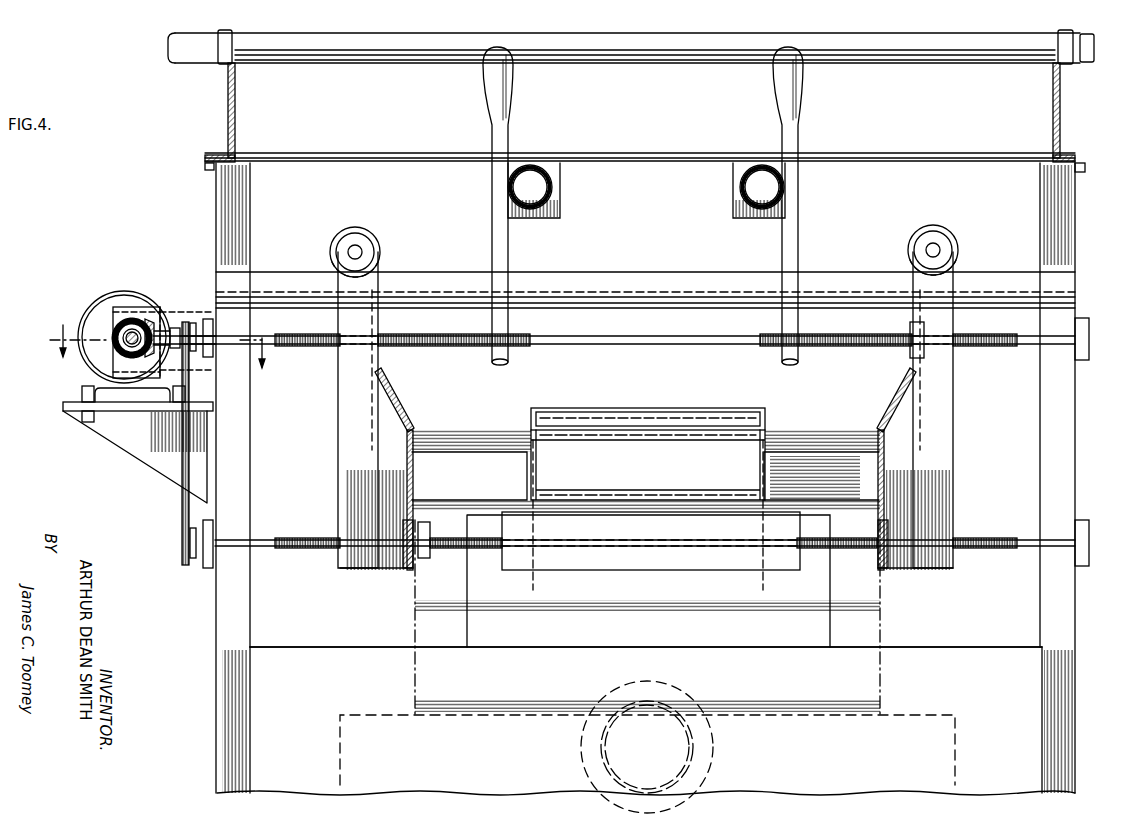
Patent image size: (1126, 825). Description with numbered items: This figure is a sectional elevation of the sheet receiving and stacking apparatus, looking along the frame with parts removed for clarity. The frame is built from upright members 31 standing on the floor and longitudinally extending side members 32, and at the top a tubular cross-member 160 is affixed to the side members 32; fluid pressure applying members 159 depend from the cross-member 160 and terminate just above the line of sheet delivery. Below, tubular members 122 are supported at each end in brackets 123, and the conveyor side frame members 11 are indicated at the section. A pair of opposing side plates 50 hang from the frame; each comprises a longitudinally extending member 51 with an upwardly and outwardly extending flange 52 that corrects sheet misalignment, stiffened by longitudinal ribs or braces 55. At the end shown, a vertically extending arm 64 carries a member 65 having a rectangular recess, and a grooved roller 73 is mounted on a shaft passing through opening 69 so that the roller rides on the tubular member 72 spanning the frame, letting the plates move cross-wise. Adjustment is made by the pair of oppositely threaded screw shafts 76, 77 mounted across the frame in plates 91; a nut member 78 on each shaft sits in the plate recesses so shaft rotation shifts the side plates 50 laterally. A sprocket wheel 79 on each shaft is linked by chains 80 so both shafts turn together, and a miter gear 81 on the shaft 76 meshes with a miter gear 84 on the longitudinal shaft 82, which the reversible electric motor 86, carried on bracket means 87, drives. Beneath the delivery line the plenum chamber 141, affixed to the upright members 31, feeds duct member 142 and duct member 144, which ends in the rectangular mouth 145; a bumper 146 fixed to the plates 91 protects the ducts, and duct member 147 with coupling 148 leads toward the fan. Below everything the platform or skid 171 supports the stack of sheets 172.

The side frame members 11 is at (162, 347).
The upright members 31 is at (250, 625).
The longitudinally extending side members 32 is at (228, 92).
The side plates 50 is at (416, 418).
The longitudinally extending member 51 is at (416, 478).
The upwardly and outwardly extending flange 52 is at (385, 390).
The longitudinal ribs or braces 55 is at (905, 575).
The vertically extending arm 64 is at (340, 382).
The member 65 is at (372, 418).
The opening 69 is at (375, 250).
The tubular member 72 is at (638, 277).
The grooved rollers 73 is at (363, 230).
The screw threaded shaft 76 is at (457, 347).
The screw threaded shaft 77 is at (433, 550).
The nut member 78 is at (910, 330).
The sprocket wheel 79 is at (193, 320).
The chains 80 is at (182, 512).
The miter gear 81 is at (140, 326).
The shaft or rod 82 is at (118, 346).
The miter gear 84 is at (116, 330).
The electric motor 86 is at (143, 291).
The bracket means 87 is at (128, 450).
The plate 91 is at (216, 238).
The tubular members 122 is at (553, 183).
The brackets 123 is at (562, 208).
The plenum chamber 141 is at (945, 647).
The duct member 142 is at (825, 632).
The duct member 144 is at (772, 440).
The rectangular shaped mouth or opening 145 is at (697, 406).
The bumper 146 is at (531, 468).
The duct member 147 is at (647, 747).
The coupling 148 is at (685, 700).
The fluid pressure applying members 159 is at (507, 90).
The tubular cross-member 160 is at (634, 34).
The platform or skid 171 is at (360, 714).
The stack of sheets 172 is at (485, 435).